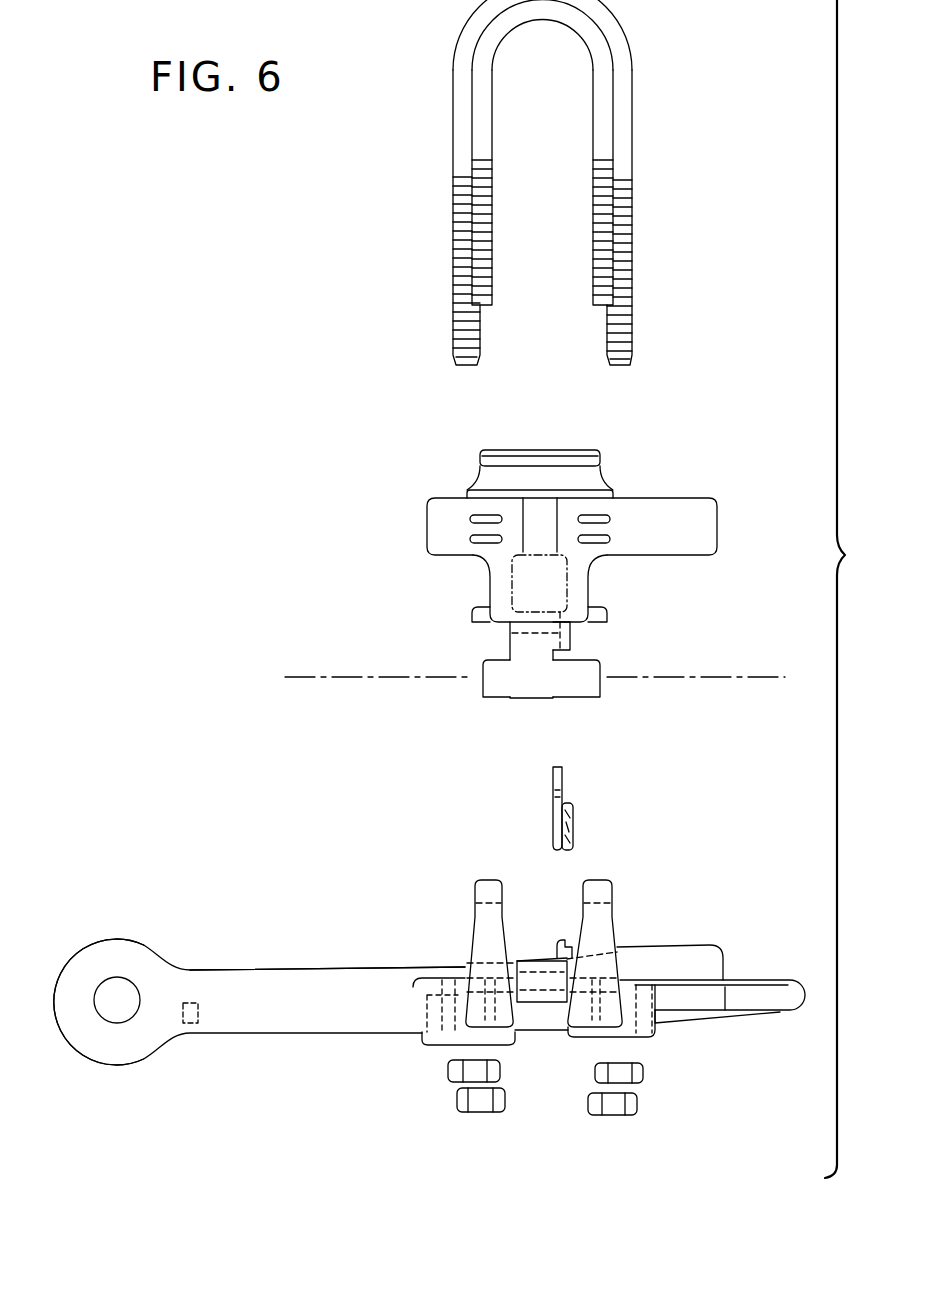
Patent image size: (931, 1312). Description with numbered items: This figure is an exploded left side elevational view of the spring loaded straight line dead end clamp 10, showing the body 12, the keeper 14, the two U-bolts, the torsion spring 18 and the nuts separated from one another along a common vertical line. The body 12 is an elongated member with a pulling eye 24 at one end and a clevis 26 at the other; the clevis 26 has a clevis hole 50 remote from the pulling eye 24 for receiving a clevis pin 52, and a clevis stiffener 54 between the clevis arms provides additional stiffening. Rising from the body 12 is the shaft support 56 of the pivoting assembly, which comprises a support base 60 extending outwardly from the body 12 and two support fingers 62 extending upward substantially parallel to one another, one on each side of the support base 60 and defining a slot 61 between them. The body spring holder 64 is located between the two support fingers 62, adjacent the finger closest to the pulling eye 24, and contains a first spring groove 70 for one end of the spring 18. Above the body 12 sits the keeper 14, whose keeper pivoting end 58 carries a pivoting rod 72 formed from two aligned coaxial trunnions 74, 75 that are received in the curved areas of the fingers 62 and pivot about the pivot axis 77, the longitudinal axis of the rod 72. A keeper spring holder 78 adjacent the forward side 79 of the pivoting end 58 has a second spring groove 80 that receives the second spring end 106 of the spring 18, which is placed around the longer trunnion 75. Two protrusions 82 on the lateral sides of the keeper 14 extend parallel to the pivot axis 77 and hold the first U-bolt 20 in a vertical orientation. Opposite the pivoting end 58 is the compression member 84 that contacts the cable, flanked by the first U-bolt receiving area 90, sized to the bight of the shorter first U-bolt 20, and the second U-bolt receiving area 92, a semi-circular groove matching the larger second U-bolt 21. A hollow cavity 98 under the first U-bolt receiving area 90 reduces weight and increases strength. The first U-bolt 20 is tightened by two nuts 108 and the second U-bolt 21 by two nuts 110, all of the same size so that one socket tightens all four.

The spring loaded straight line dead end clamp 10 is at (353, 317).
The body 12 is at (328, 1035).
The keeper 14 is at (427, 512).
The torsion spring 18 is at (553, 815).
The first U-bolt 20 is at (587, 63).
The second U-bolt 21 is at (633, 77).
The pulling eye 24 is at (767, 980).
The clevis 26 is at (257, 970).
The clevis hole 50 is at (112, 975).
The clevis pin 52 is at (120, 1007).
The clevis stiffener 54 is at (195, 1035).
The shaft support 56 is at (635, 935).
The keeper pivoting end 58 is at (613, 645).
The support base 60 is at (545, 1002).
The slot 61 is at (532, 892).
The support finger 62 is at (600, 880).
The body spring holder 64 is at (557, 950).
The first spring groove 70 is at (572, 940).
The pivoting rod 72 is at (600, 690).
The trunnion 74 is at (490, 697).
The longer trunnion 75 is at (585, 697).
The pivot axis 77 is at (300, 682).
The keeper spring holder 78 is at (570, 628).
The forward side 79 is at (555, 655).
The second spring groove 80 is at (507, 632).
The protrusion 82 is at (603, 607).
The compression member 84 is at (703, 512).
The first U-bolt receiving area 90 is at (490, 587).
The second U-bolt receiving area 92 is at (593, 480).
The hollow cavity 98 is at (512, 572).
The second spring end 106 is at (563, 785).
The nut 108 is at (480, 1113).
The nut 110 is at (448, 1071).